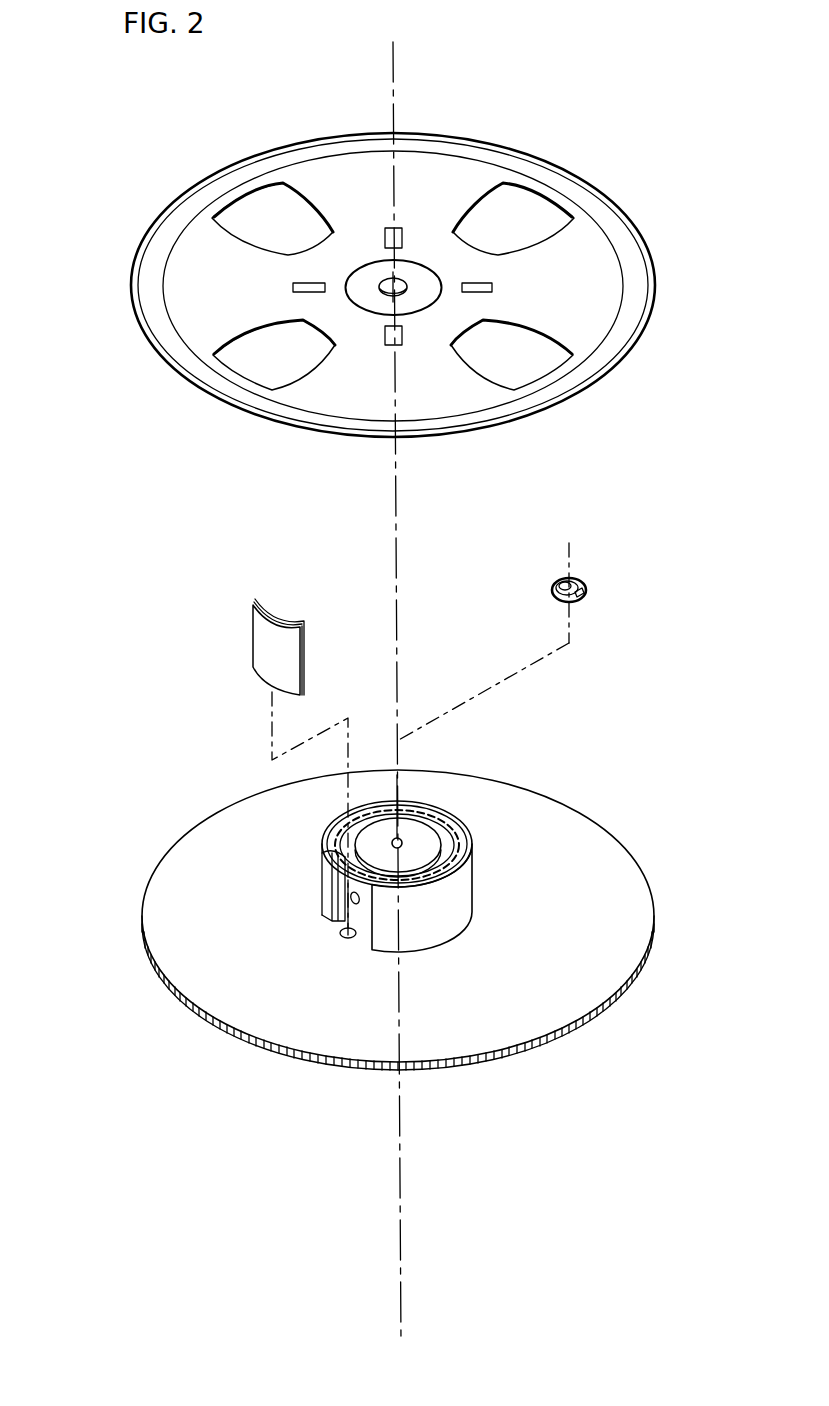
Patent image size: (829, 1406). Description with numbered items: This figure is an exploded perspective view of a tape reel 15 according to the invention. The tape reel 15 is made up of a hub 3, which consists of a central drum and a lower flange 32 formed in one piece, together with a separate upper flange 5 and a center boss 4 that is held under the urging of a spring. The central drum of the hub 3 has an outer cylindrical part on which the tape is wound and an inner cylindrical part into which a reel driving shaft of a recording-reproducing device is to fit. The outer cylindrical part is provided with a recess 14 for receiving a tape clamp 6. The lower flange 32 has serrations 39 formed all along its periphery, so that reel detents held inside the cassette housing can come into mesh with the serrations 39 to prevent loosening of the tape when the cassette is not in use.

The hub 3 is at (408, 942).
The center boss 4 is at (580, 578).
The upper flange 5 is at (193, 316).
The tape clamp 6 is at (253, 638).
The recess 14 is at (367, 925).
The tape reel 15 is at (350, 270).
The lower flange 32 is at (222, 843).
The serrations 39 is at (218, 1030).